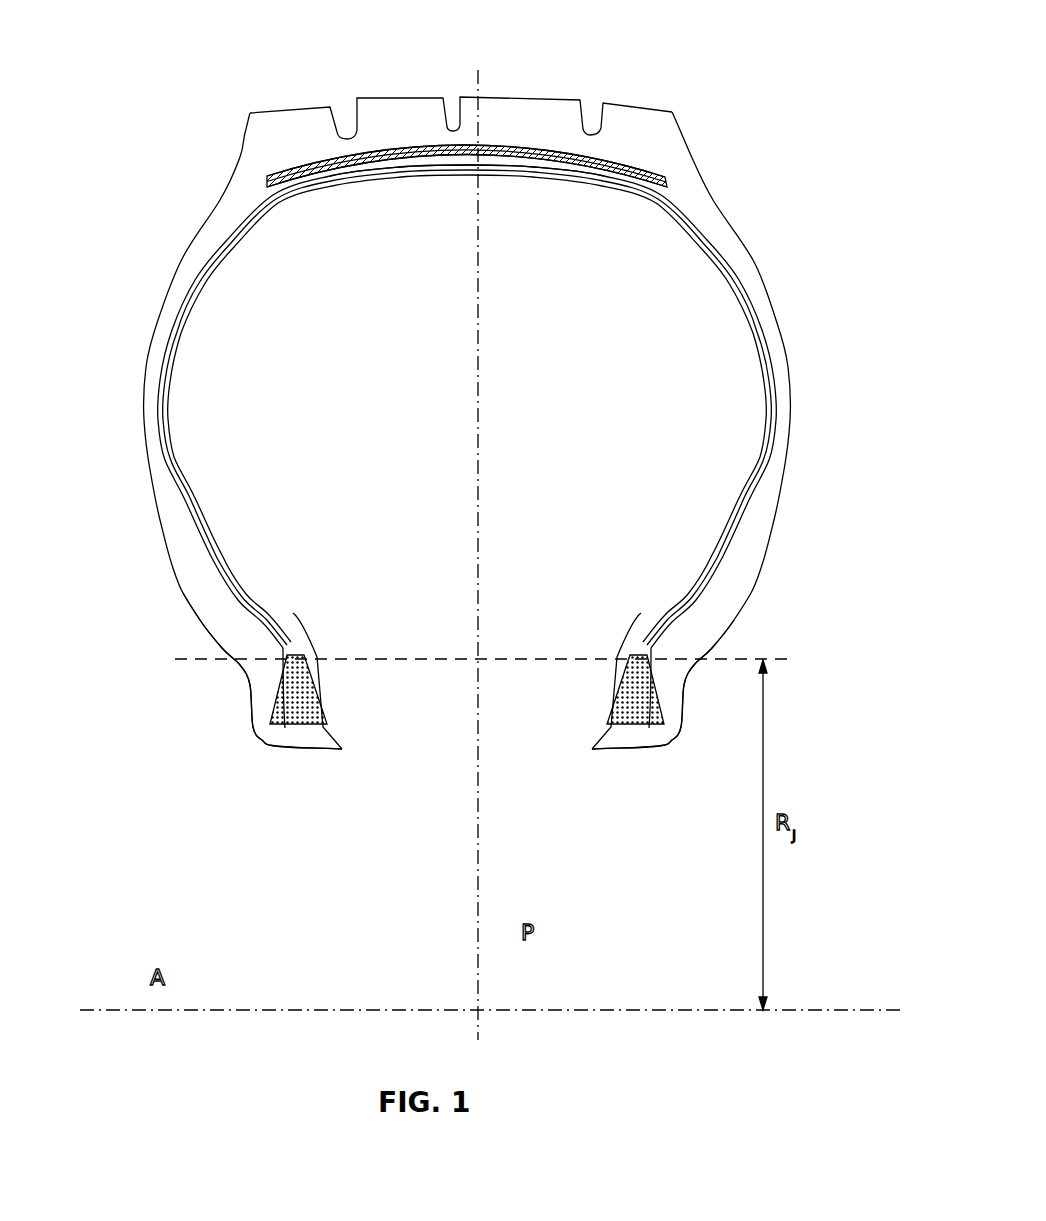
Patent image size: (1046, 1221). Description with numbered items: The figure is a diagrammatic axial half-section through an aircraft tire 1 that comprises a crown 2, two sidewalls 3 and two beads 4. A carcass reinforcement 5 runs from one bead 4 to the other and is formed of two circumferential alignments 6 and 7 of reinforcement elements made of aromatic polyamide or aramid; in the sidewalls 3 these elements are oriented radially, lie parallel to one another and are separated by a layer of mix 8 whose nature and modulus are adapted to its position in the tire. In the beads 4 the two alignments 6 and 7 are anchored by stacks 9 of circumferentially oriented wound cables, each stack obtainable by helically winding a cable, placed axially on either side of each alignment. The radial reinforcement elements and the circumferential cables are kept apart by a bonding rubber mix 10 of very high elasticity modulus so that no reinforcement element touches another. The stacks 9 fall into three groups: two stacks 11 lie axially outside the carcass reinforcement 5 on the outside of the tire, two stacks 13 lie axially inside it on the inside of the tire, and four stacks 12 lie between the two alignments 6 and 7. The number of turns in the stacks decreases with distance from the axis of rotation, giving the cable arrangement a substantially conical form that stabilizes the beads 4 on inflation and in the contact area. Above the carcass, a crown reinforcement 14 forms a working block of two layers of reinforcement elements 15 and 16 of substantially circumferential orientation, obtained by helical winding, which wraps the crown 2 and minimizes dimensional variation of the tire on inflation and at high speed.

The aircraft tire 1 is at (471, 383).
The crown 2 is at (527, 122).
The sidewall 3 is at (158, 342).
The bead 4 is at (258, 691).
The carcass reinforcement 5 is at (242, 227).
The circumferential alignment of reinforcement elements 6 is at (290, 196).
The circumferential alignment of reinforcement elements 7 is at (455, 166).
The layer of mix 8 is at (172, 352).
The stack of circumferentially oriented wound cables 9 is at (660, 710).
The bonding rubber mix 10 is at (302, 676).
The stacks arranged axially externally 11 is at (660, 712).
The stacks arranged between the circumferential alignments 12 is at (645, 723).
The stacks arranged axially internally 13 is at (605, 713).
The crown reinforcement 14 is at (658, 165).
The layer of reinforcement elements 15 is at (596, 160).
The layer of reinforcement elements 16 is at (485, 150).